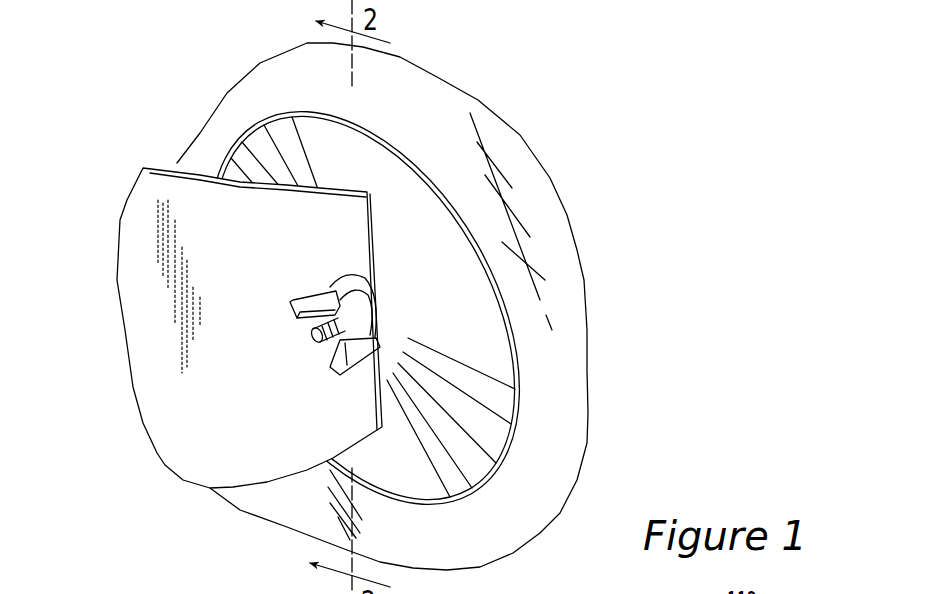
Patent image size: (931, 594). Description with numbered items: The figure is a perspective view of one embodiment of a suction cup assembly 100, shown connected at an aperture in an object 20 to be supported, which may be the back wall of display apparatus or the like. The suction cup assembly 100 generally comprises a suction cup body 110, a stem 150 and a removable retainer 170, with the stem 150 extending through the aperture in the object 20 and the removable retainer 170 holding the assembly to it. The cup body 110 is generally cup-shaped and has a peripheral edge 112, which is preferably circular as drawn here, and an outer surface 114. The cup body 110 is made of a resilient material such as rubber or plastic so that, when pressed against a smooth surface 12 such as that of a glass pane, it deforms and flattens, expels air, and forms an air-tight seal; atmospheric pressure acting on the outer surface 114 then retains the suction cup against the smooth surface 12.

The smooth surface 12 is at (570, 378).
The object 20 is at (177, 165).
The suction cup assembly 100 is at (422, 158).
The suction cup body 110 is at (425, 243).
The peripheral edge 112 is at (498, 283).
The outer surface 114 is at (484, 333).
The stem 150 is at (313, 347).
The removable retainer 170 is at (312, 288).